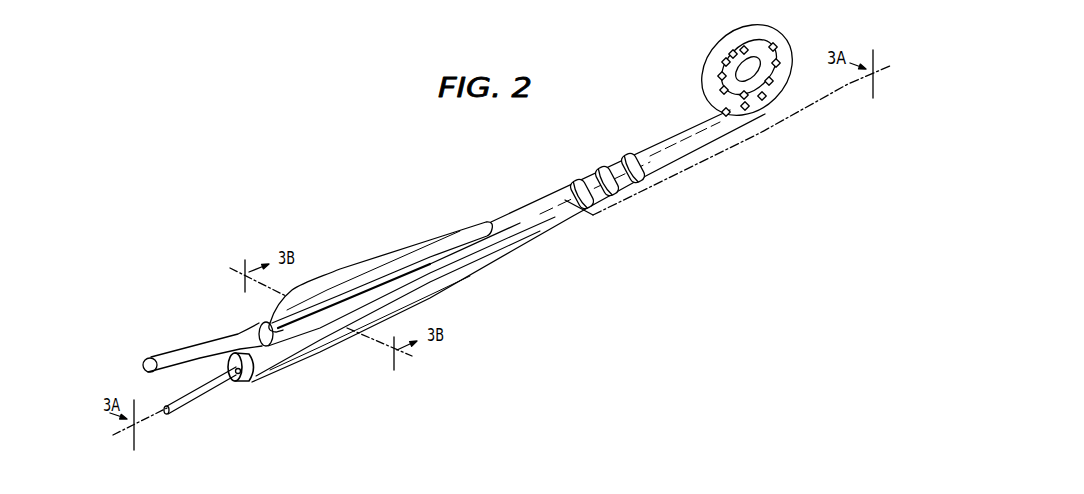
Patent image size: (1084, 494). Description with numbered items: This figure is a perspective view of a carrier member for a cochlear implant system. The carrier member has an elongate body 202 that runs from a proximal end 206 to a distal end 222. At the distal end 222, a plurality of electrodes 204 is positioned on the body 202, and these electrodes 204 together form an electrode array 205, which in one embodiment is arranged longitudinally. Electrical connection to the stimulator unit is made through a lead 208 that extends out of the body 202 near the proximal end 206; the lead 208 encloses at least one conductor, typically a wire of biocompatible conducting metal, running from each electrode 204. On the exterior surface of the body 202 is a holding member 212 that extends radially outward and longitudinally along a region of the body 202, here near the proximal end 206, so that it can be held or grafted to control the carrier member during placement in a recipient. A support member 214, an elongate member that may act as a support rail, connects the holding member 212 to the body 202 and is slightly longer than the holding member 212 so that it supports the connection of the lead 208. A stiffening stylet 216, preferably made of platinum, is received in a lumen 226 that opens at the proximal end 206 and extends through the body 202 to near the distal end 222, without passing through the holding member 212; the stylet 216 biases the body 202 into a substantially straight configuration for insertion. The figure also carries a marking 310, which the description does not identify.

The elongate body 202 is at (452, 273).
The electrode 204 is at (778, 62).
The electrode array 205 is at (808, 70).
The proximal end 206 is at (212, 368).
The lead 208 is at (182, 355).
The holding member 212 is at (357, 272).
The support member 214 is at (255, 356).
The stylet 216 is at (192, 398).
The distal end 222 is at (784, 115).
The lumen 226 is at (241, 382).
The catheter assembly 310 is at (406, 224).